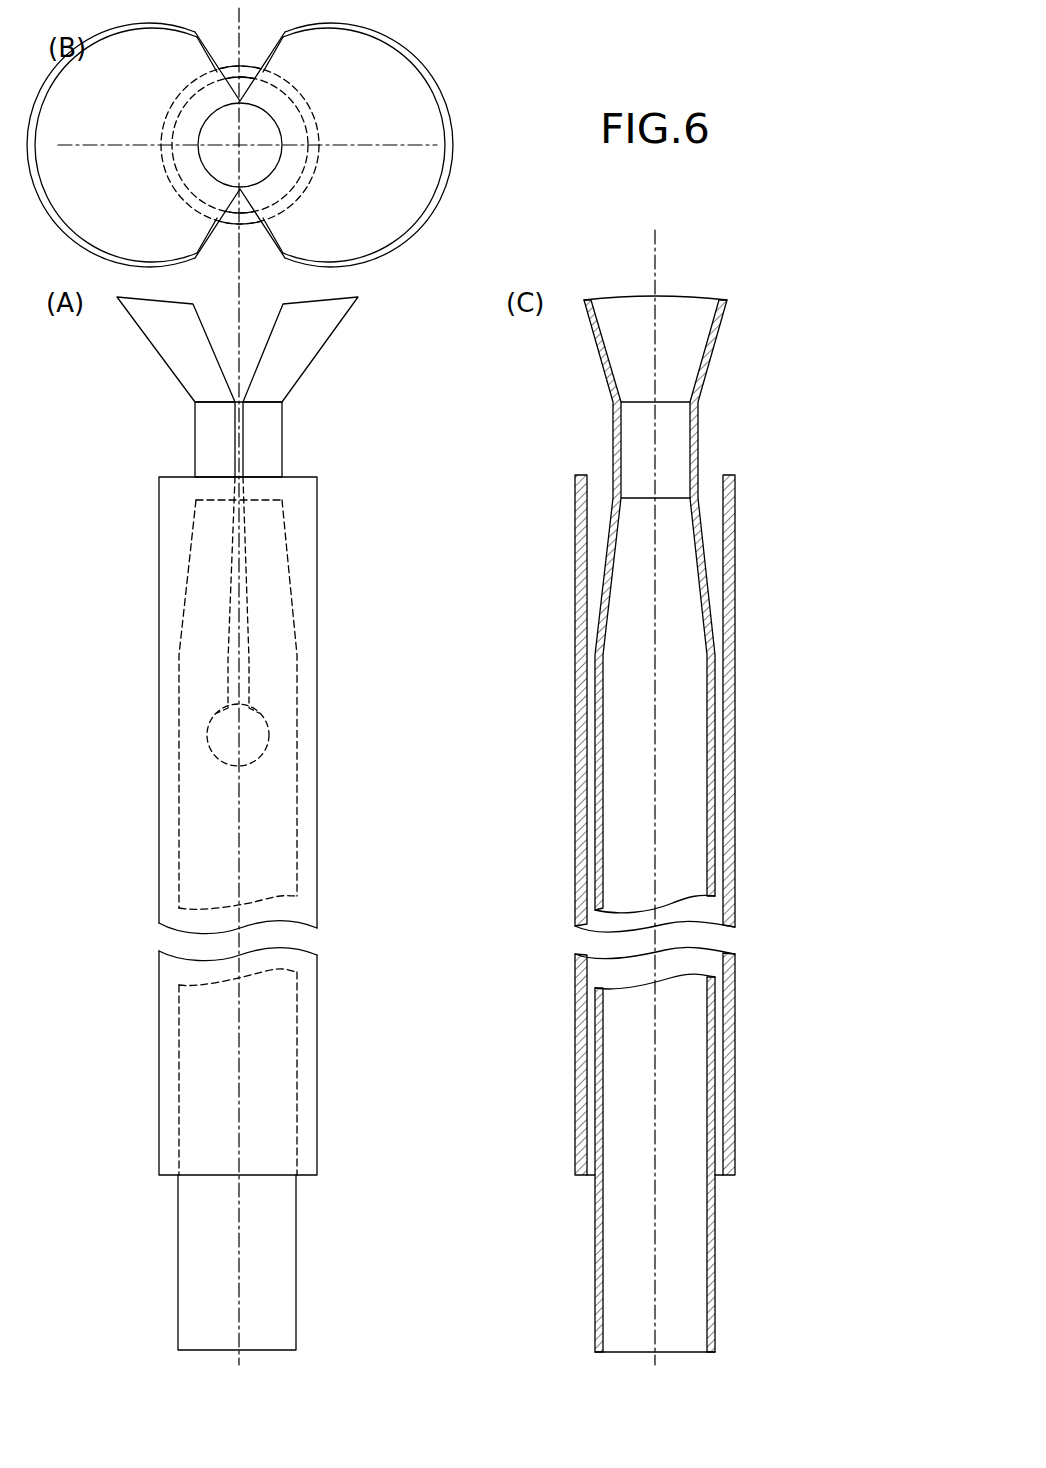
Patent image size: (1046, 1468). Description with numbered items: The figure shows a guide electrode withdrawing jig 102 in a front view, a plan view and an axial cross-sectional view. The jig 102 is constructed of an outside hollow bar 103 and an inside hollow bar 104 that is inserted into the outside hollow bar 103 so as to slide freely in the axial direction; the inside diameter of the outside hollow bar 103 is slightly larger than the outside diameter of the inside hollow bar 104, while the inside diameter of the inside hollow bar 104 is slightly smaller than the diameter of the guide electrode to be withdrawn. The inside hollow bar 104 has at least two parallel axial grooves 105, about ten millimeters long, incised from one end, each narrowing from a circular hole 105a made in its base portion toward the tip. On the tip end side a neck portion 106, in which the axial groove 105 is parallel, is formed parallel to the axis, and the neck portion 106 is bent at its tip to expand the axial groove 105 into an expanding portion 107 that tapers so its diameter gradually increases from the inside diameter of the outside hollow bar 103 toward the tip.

The guide electrode withdrawing jig 102 is at (340, 565).
The outside hollow bar 103 is at (159, 748).
The inside hollow bar 104 is at (179, 843).
The axial groove 105 is at (248, 686).
The circular hole 105a is at (257, 732).
The neck portion 106 is at (195, 438).
The expanding portion 107 is at (313, 359).